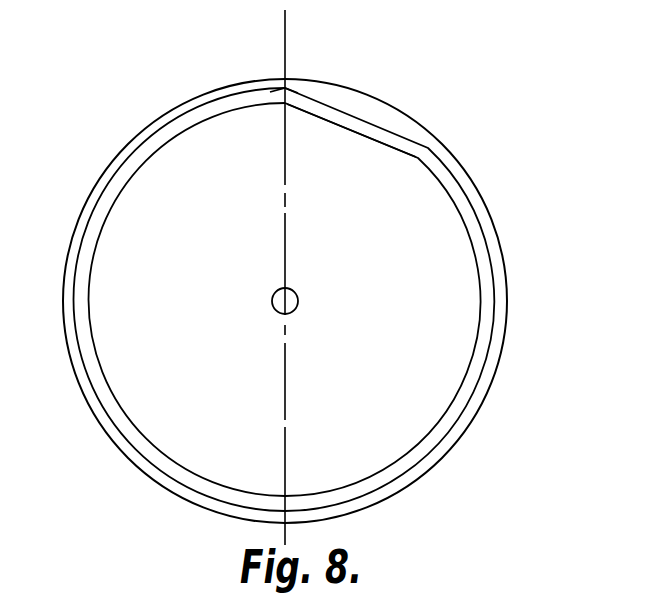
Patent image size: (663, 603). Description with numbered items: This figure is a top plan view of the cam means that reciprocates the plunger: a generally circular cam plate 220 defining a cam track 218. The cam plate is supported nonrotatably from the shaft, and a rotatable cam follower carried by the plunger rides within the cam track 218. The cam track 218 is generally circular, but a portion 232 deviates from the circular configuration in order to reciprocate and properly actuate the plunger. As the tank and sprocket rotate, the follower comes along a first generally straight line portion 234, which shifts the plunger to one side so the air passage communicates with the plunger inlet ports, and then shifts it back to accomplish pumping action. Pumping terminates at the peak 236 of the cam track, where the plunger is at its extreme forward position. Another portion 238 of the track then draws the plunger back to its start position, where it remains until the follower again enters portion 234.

The cam track 218 is at (468, 408).
The cam plate 220 is at (387, 115).
The portion of the cam track 232 is at (327, 83).
The first generally straight line portion 234 is at (412, 162).
The peak 236 is at (285, 74).
The another portion 238 is at (236, 80).